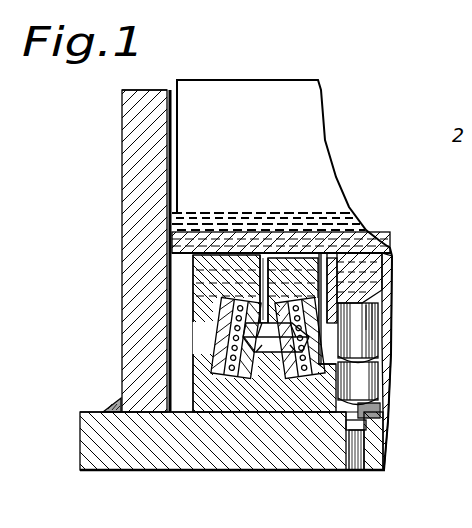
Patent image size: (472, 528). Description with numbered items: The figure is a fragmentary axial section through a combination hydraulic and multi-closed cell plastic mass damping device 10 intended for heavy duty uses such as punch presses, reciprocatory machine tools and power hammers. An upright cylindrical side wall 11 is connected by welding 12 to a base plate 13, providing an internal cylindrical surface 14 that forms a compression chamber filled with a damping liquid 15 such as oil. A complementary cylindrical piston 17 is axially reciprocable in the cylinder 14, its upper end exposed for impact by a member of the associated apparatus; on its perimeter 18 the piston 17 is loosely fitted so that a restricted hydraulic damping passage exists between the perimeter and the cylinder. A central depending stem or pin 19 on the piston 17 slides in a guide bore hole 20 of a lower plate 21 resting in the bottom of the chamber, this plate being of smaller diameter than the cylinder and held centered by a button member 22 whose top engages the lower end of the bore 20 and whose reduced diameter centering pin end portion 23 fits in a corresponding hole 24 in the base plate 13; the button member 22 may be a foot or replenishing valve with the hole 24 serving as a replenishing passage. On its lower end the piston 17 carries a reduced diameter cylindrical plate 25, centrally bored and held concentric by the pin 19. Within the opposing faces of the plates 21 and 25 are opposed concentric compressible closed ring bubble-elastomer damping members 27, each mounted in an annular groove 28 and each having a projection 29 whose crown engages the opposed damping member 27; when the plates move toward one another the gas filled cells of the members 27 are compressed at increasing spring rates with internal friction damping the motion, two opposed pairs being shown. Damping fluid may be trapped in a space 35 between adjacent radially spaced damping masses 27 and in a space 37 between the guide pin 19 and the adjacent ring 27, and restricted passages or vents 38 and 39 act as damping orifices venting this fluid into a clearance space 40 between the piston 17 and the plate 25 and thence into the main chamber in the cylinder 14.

The combination hydraulic and multi-closed cell plastic mass device 10 is at (118, 142).
The upright cylindrical side wall 11 is at (136, 190).
The welding 12 is at (112, 404).
The base plate 13 is at (110, 455).
The internal cylindrical surface 14 is at (172, 145).
The damping liquid 15 is at (239, 211).
The piston 17 is at (226, 95).
The perimeter 18 is at (176, 115).
The stem or pin 19 is at (393, 314).
The guide bore hole 20 is at (380, 397).
The lower plate 21 is at (221, 408).
The button member 22 is at (390, 409).
The centering pin end portion 23 is at (366, 421).
The hole 24 is at (364, 457).
The cylindrical plate 25 is at (210, 275).
The damping member 27 is at (264, 355).
The annular groove 28 is at (221, 316).
The projection 29 is at (225, 380).
The space 35 is at (273, 353).
The space 37 is at (387, 347).
The restricted passage or vent 38 is at (258, 257).
The restricted passage or vent 39 is at (389, 247).
The clearance space 40 is at (305, 254).